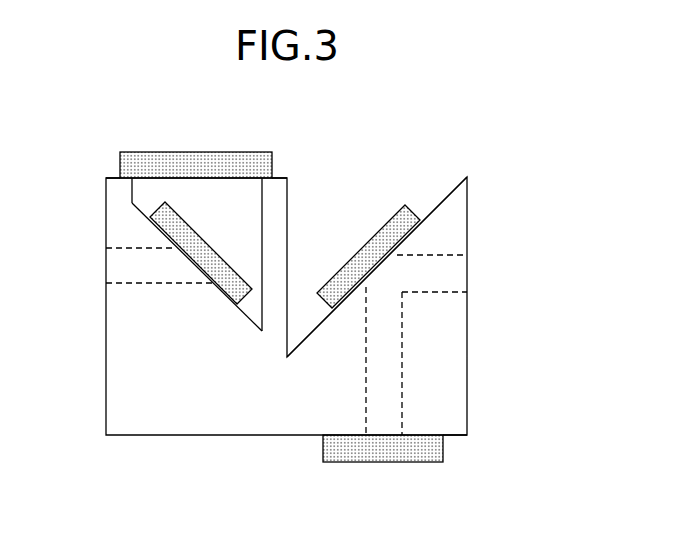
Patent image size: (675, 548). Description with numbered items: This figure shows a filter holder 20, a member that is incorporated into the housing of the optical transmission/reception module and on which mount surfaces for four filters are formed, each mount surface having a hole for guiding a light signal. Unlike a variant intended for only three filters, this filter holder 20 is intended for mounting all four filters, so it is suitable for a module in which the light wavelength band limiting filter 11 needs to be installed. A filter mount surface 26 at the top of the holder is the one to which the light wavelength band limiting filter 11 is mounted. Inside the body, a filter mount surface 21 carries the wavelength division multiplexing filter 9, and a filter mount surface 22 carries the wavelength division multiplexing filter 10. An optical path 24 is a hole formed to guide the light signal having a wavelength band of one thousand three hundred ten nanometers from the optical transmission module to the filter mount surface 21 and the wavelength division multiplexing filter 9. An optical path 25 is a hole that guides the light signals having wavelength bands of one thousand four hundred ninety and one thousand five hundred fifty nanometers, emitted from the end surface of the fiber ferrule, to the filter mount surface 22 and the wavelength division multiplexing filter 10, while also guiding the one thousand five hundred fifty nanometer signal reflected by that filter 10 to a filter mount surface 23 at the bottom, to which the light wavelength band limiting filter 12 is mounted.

The filter holder 20 is at (106, 385).
The filter mount surface 26 is at (112, 176).
The light wavelength band limiting filter 11 is at (226, 152).
The light wavelength band limiting filter 12 is at (403, 463).
The filter mount surface 21 is at (139, 214).
The wavelength division multiplexing filter 9 is at (228, 262).
The filter mount surface 22 is at (447, 199).
The wavelength division multiplexing filter 10 is at (358, 248).
The optical path 24 is at (122, 272).
The optical path 25 is at (452, 275).
The filter mount surface 23 is at (459, 438).